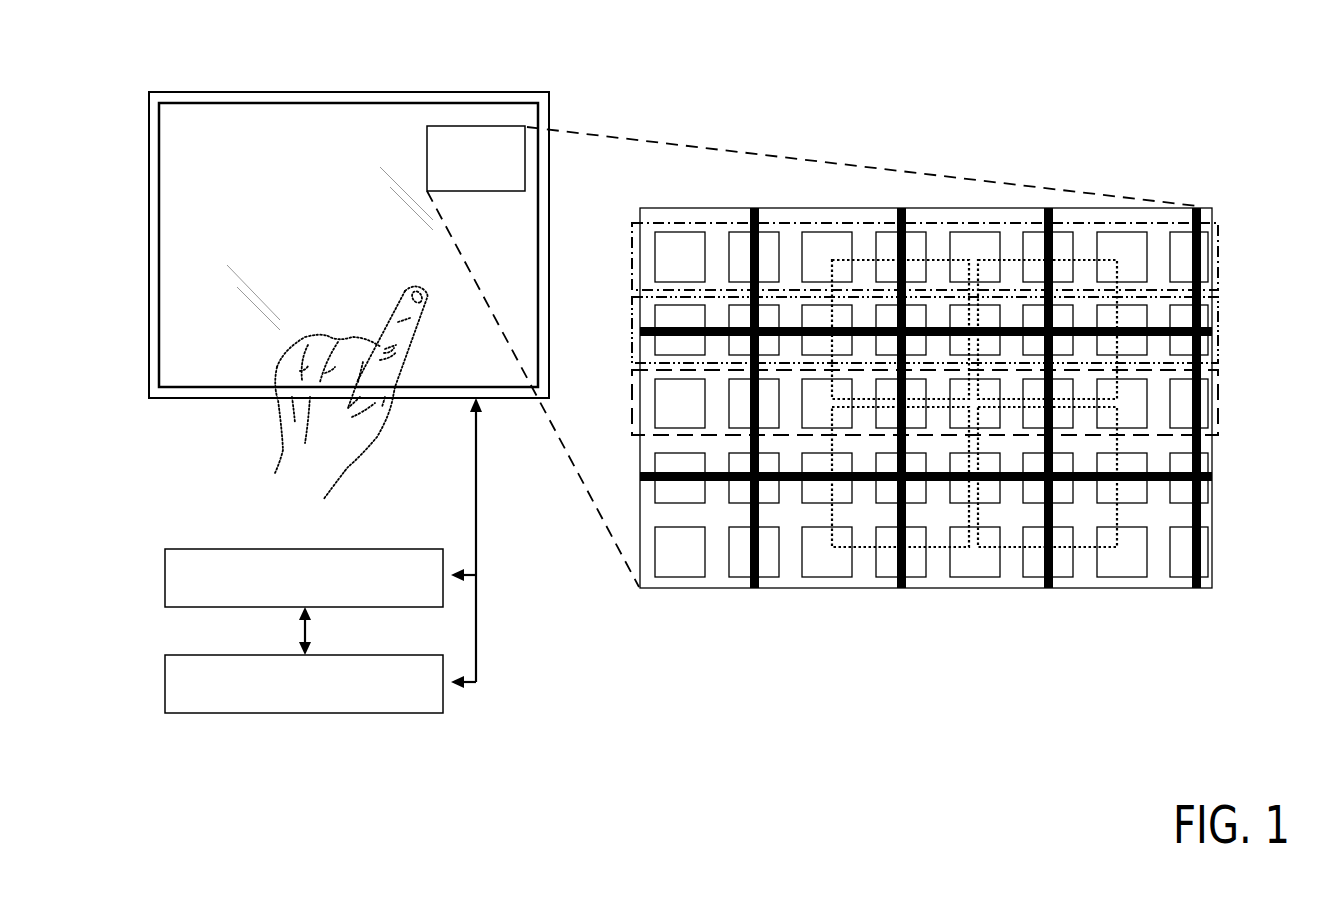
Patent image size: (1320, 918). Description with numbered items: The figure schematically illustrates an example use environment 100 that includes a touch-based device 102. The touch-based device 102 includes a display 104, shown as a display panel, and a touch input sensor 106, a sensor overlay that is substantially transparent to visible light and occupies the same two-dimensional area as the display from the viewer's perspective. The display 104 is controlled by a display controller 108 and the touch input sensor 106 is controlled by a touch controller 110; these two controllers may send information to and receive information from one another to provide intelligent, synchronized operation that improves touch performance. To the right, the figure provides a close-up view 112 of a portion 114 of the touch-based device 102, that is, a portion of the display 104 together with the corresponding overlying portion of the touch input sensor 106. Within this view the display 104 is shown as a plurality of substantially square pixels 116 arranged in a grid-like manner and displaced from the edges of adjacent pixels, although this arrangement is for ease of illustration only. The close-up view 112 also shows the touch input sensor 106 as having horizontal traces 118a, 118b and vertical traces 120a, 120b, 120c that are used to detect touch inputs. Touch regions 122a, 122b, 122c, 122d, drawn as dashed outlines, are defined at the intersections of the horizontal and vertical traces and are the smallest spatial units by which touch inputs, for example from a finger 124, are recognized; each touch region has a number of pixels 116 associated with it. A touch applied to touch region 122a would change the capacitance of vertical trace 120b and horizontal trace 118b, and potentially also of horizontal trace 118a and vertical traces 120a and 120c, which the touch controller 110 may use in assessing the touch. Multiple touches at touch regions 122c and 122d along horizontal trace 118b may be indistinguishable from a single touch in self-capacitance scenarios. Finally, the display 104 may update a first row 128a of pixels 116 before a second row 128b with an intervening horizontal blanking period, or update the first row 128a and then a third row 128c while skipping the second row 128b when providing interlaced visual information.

The use environment 100 is at (977, 79).
The touch-based device 102 is at (415, 72).
The display 104 is at (219, 92).
The touch input sensor 106 is at (202, 126).
The display controller 108 is at (437, 600).
The touch controller 110 is at (437, 705).
The close-up view 112 is at (640, 207).
The portion 114 is at (461, 149).
The pixels 116 is at (696, 267).
The horizontal trace 118a is at (645, 326).
The horizontal trace 118b is at (645, 471).
The vertical trace 120a is at (748, 590).
The vertical trace 120b is at (895, 590).
The vertical trace 120c is at (1042, 590).
The touch region 122a is at (832, 261).
The touch region 122b is at (1117, 262).
The touch region 122c is at (832, 514).
The touch region 122d is at (1117, 514).
The finger 124 is at (424, 333).
The first row 128a is at (1219, 233).
The second row 128b is at (1219, 338).
The third row 128c is at (1219, 434).